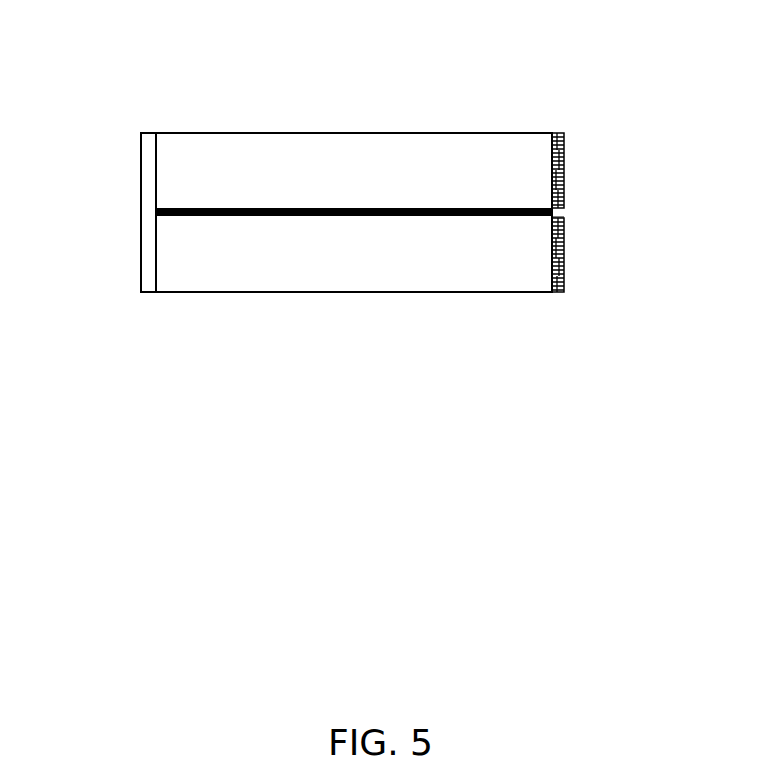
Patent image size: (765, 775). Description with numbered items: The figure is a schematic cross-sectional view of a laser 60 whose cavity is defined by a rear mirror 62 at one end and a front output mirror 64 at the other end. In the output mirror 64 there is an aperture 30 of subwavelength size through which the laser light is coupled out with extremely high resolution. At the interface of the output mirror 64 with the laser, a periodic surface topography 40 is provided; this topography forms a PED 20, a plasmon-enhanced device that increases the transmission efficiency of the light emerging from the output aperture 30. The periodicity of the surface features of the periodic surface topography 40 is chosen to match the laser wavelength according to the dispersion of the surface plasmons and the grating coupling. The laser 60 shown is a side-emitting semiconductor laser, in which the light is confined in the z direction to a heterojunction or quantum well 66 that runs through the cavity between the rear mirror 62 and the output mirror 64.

The PED 20 is at (587, 180).
The aperture 30 is at (568, 215).
The periodic surface topography 40 is at (553, 165).
The laser 60 is at (310, 133).
The rear mirror 62 is at (155, 190).
The output mirror 64 is at (547, 270).
The heterojunction or quantum well 66 is at (419, 216).